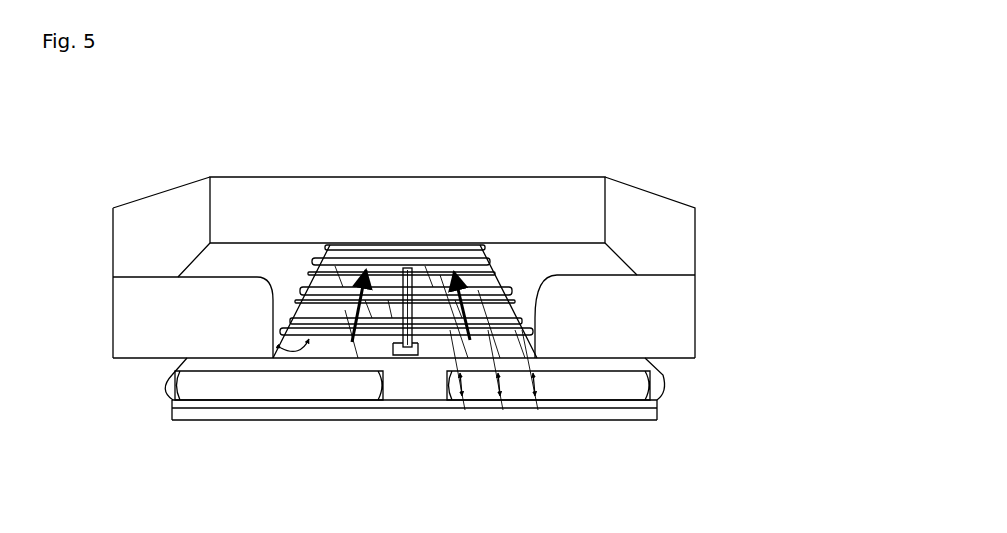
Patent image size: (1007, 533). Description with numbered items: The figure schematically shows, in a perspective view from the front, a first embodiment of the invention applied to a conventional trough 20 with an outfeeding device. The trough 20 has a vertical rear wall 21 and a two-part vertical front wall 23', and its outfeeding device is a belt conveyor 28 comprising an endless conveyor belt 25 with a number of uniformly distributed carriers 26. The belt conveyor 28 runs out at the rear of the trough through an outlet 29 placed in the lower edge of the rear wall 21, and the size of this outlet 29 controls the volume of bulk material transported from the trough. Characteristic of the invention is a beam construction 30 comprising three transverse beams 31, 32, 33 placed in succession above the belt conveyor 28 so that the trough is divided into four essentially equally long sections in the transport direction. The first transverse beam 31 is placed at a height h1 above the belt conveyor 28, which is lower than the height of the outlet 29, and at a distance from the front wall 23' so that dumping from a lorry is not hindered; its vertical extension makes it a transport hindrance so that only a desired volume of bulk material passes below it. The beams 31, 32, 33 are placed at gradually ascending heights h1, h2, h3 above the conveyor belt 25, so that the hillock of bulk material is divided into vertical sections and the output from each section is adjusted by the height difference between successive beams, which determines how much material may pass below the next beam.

The trough 20 is at (404, 253).
The vertical rear wall 21 is at (252, 200).
The front wall part 23' is at (162, 297).
The conveyor belt 25 is at (347, 308).
The carriers 26 is at (350, 285).
The belt conveyor 28 is at (340, 238).
The outlet 29 is at (402, 256).
The beam construction 30 is at (388, 350).
The first transverse beam 31 is at (535, 333).
The second transverse beam 32 is at (512, 295).
The third transverse beam 33 is at (490, 262).
The height of first transverse beam h1 is at (539, 398).
The height of second transverse beam h2 is at (502, 398).
The height of third transverse beam h3 is at (463, 398).